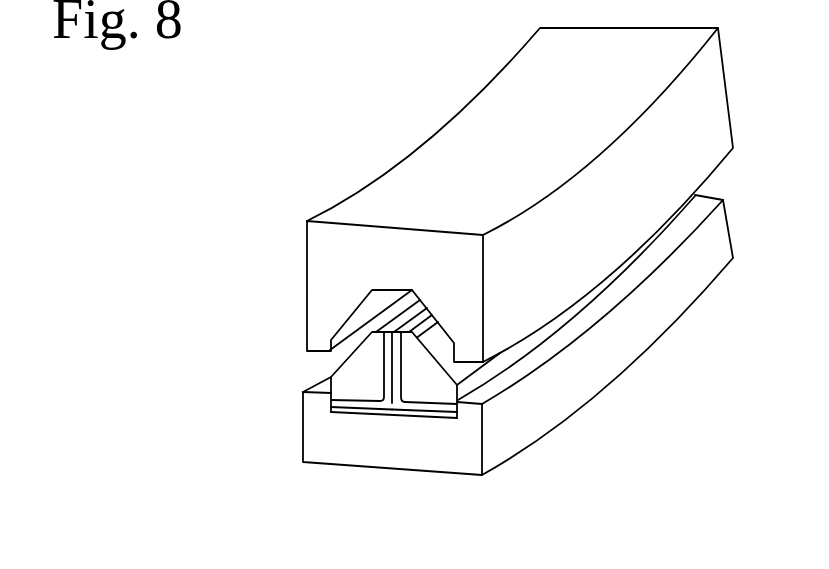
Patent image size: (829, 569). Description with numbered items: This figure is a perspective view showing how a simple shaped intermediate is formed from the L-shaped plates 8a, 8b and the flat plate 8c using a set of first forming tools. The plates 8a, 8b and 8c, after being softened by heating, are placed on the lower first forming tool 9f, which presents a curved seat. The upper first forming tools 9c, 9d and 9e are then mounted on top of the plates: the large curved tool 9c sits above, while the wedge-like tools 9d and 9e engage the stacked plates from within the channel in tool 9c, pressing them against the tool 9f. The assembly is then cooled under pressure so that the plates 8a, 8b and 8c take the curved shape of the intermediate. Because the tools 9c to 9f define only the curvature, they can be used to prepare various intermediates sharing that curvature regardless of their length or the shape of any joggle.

The first forming tool 9c is at (455, 157).
The first forming tool 9d is at (413, 370).
The first forming tool 9e is at (355, 372).
The first forming tool 9f is at (563, 393).
The L-shaped plate 8a is at (409, 404).
The L-shaped plate 8b is at (362, 402).
The flat plate 8c is at (425, 414).